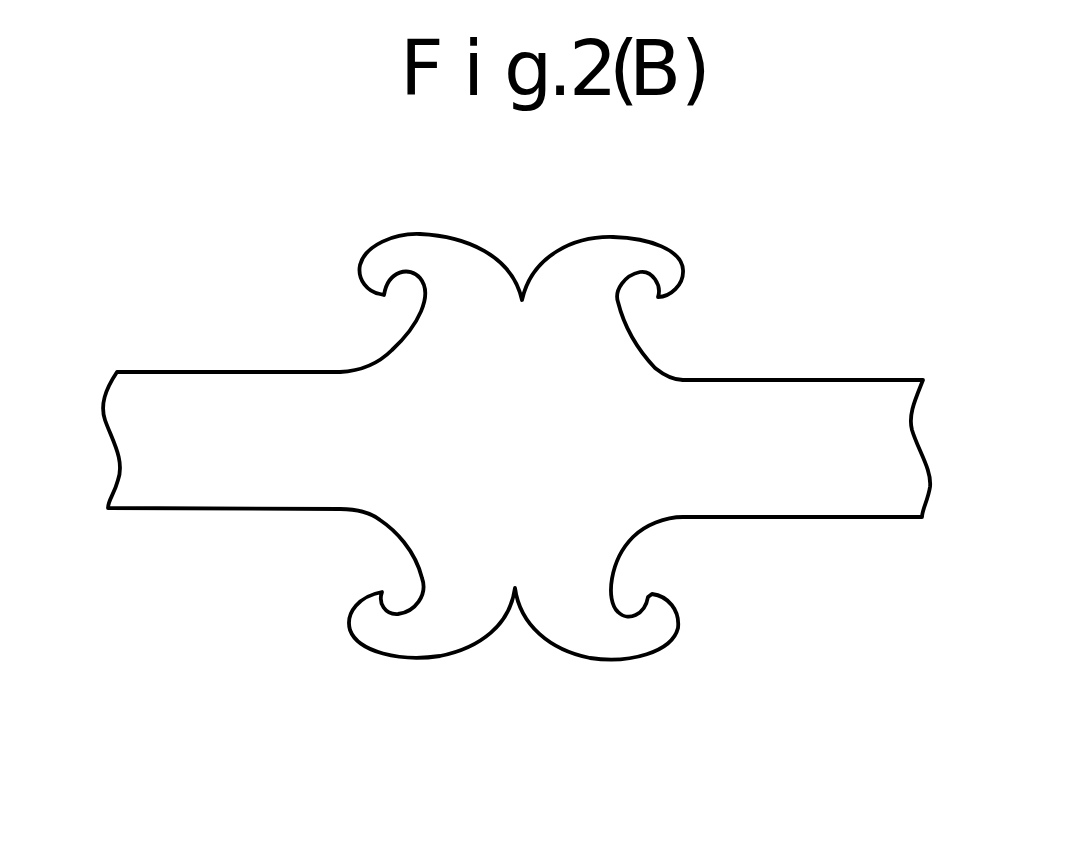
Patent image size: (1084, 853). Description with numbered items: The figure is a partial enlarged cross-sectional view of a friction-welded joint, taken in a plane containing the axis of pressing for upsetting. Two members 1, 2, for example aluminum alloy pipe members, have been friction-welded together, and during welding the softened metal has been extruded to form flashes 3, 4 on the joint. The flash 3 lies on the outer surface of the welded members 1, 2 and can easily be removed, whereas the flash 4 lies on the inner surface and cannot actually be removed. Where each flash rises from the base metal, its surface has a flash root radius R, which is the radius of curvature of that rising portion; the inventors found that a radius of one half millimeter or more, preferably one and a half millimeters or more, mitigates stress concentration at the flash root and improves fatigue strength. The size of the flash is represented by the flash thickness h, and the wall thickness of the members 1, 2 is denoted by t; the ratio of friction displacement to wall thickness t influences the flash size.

The member 1 is at (180, 371).
The member 2 is at (867, 378).
The flash 3 is at (648, 239).
The flash 4 is at (658, 655).
The flash root radius R is at (417, 303).
The flash thickness h is at (537, 305).
The wall thickness t is at (753, 380).